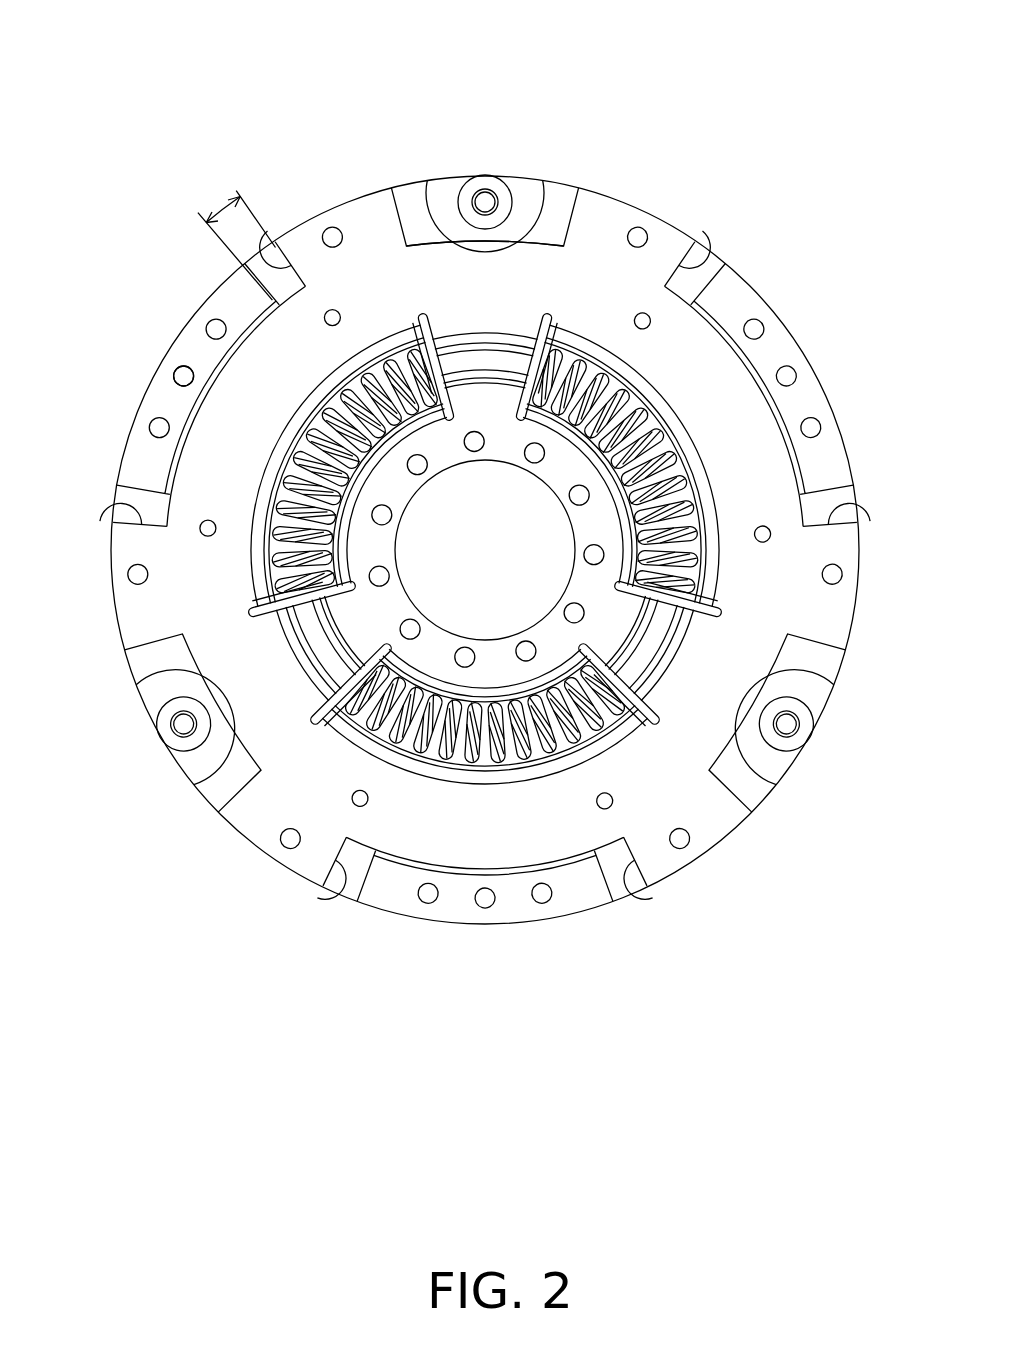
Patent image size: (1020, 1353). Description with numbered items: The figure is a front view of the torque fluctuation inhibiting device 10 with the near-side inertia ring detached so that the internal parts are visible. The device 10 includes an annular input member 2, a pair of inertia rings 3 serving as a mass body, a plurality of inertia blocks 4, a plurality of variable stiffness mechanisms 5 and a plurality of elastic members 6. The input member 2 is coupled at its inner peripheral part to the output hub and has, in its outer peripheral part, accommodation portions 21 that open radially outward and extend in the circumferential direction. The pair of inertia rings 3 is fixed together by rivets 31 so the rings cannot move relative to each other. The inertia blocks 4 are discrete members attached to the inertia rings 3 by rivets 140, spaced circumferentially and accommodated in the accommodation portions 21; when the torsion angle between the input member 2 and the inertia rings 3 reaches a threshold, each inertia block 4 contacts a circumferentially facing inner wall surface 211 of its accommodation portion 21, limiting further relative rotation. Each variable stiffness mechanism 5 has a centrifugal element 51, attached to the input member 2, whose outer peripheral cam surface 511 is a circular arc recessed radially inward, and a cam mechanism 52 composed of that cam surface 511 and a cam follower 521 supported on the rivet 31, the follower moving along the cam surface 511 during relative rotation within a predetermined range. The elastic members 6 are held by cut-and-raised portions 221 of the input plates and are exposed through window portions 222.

The torque fluctuation inhibiting device 10 is at (761, 96).
The input member 2 is at (680, 226).
The accommodation portion 21 is at (137, 491).
The inner wall surface 211 is at (283, 268).
The cut-and-raised portion 221 is at (643, 387).
The window portion 222 is at (688, 466).
The inertia ring 3 is at (710, 247).
The rivet 31 is at (483, 197).
The inertia block 4 is at (195, 335).
The rivet 140 is at (185, 368).
The variable stiffness mechanism 5 is at (448, 148).
The centrifugal element 51 is at (556, 200).
The cam surface 511 is at (555, 200).
The cam mechanism 52 is at (447, 184).
The cam follower 521 is at (500, 190).
The elastic member 6 is at (657, 427).